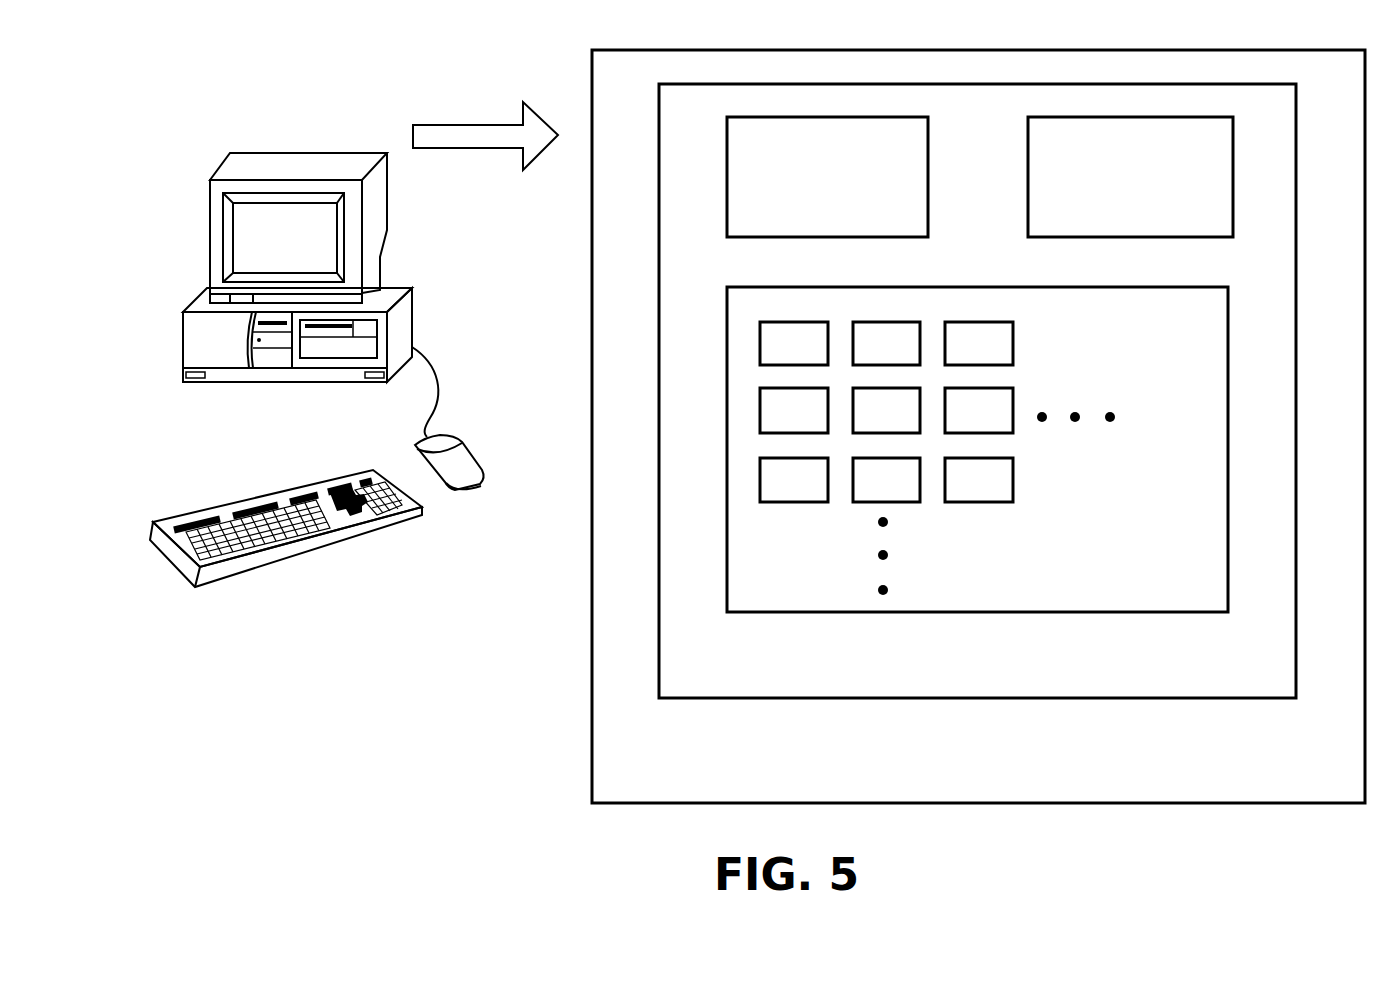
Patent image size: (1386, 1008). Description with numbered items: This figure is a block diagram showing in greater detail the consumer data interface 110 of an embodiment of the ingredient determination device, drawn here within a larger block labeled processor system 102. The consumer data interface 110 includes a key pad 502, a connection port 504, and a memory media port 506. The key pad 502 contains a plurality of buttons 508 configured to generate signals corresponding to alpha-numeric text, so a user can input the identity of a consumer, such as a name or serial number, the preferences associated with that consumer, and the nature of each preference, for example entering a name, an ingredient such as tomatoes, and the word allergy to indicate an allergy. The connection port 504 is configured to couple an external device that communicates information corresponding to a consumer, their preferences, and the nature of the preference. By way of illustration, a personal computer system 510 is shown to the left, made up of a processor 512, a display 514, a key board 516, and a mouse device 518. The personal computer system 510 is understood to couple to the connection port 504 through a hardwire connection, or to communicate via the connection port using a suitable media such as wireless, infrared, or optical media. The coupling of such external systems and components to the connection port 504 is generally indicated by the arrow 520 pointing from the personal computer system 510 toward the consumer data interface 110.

The processor system 102 is at (1335, 782).
The consumer data interface 110 is at (1282, 680).
The key pad 502 is at (1215, 597).
The connection port 504 is at (873, 223).
The memory media port 506 is at (1176, 220).
The buttons 508 is at (1112, 374).
The personal computer (PC) system 510 is at (369, 606).
The processor 512 is at (297, 383).
The display 514 is at (286, 260).
The key board 516 is at (268, 562).
The mouse device 518 is at (468, 452).
The arrow 520 is at (455, 150).